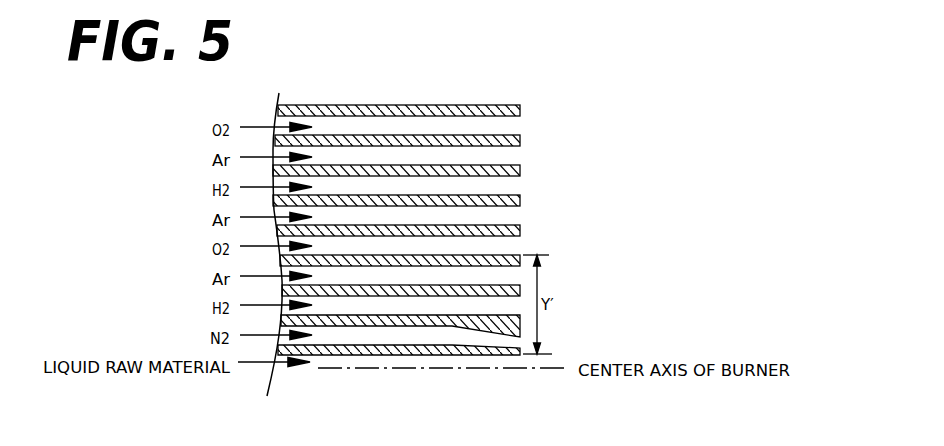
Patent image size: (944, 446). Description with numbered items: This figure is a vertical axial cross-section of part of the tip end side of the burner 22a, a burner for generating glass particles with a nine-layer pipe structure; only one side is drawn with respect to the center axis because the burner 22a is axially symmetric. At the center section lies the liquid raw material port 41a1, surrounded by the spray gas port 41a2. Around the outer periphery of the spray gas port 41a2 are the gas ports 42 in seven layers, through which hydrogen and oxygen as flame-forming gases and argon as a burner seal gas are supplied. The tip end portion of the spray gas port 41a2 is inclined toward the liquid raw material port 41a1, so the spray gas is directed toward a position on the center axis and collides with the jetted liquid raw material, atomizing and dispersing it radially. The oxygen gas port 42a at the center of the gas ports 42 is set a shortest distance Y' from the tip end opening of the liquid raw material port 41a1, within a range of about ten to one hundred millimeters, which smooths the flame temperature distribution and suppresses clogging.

The burner 22a is at (442, 82).
The gas ports 42 is at (573, 106).
The oxygen gas port 42a is at (522, 238).
The liquid raw material port 41a1 is at (425, 356).
The spray gas port 41a2 is at (452, 329).